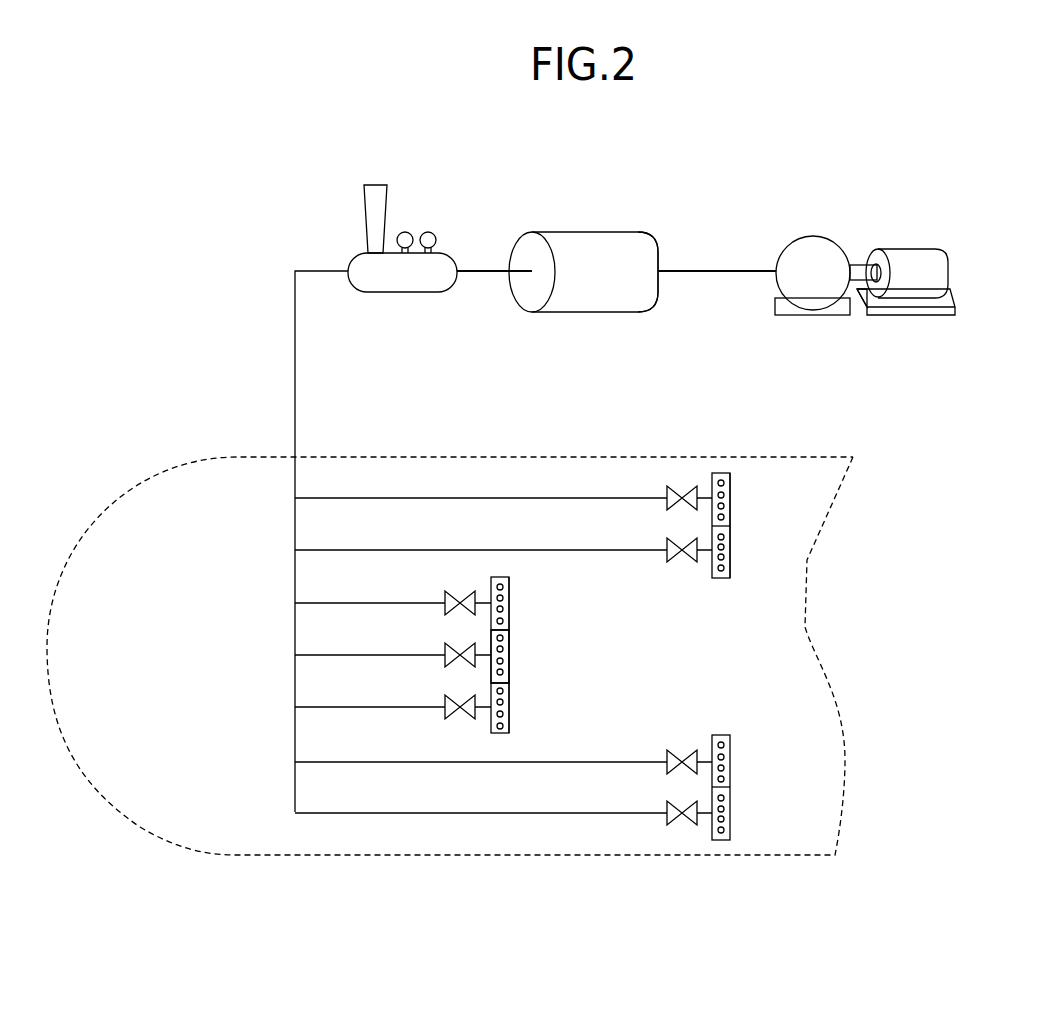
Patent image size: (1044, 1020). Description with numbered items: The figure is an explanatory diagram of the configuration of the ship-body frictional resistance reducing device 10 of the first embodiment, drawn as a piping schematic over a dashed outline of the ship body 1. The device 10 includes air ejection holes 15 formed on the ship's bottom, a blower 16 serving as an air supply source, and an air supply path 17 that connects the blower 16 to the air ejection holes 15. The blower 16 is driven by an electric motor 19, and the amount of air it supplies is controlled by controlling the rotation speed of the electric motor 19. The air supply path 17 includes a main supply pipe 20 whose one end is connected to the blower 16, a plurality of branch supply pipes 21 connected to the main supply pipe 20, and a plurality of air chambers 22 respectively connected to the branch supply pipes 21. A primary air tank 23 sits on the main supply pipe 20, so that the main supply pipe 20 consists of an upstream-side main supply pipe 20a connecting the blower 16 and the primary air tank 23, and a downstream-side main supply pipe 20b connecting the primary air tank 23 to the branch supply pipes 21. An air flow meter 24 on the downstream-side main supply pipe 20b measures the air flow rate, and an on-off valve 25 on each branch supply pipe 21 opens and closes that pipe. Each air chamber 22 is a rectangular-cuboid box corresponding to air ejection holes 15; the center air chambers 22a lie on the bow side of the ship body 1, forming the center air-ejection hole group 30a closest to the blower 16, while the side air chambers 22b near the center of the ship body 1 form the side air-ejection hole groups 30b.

The ship body 1 is at (162, 470).
The ship-body frictional resistance reducing device 10 is at (910, 180).
The air ejection holes 15 is at (503, 649).
The blower 16 is at (815, 237).
The air supply path 17 is at (568, 212).
The electric motor 19 is at (955, 265).
The main supply pipe 20 is at (640, 382).
The upstream-side main supply pipe 20a is at (685, 276).
The downstream-side main supply pipe 20b is at (472, 276).
The branch supply pipes 21 is at (323, 550).
The air chambers 22 is at (510, 608).
The center air chambers 22a is at (510, 697).
The side air chambers 22b is at (730, 540).
The primary air tank 23 is at (650, 242).
The air flow meter 24 is at (353, 258).
The on-off valve 25 is at (463, 712).
The center air-ejection hole group 30a is at (505, 727).
The side air-ejection hole groups 30b is at (727, 478).